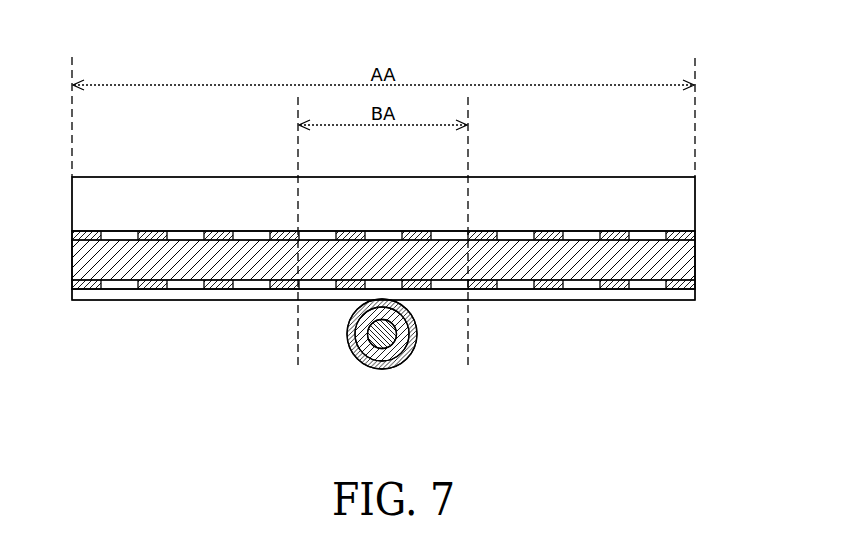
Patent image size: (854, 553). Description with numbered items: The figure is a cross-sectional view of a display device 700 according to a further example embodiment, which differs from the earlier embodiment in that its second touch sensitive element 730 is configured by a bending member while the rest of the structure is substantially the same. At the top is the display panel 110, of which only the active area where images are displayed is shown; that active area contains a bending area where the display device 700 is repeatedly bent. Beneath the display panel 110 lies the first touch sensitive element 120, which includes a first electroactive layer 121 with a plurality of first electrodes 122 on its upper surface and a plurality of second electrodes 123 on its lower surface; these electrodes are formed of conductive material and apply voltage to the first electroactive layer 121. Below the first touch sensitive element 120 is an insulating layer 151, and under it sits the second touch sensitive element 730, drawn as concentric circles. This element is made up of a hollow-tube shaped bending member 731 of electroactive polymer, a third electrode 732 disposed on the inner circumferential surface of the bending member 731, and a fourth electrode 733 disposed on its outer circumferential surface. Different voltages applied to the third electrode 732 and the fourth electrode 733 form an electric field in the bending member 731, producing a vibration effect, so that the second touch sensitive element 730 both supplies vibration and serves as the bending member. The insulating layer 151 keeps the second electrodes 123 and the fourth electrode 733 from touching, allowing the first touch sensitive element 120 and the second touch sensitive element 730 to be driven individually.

The display device 700 is at (690, 32).
The display panel 110 is at (678, 202).
The first touch sensitive element 120 is at (757, 232).
The first electroactive layer 121 is at (678, 259).
The first electrodes 122 is at (676, 237).
The second electrodes 123 is at (676, 285).
The insulating layer 151 is at (678, 296).
The second touch sensitive element 730 is at (522, 315).
The bending member 731 is at (395, 303).
The third electrode 732 is at (387, 333).
The fourth electrode 733 is at (415, 347).